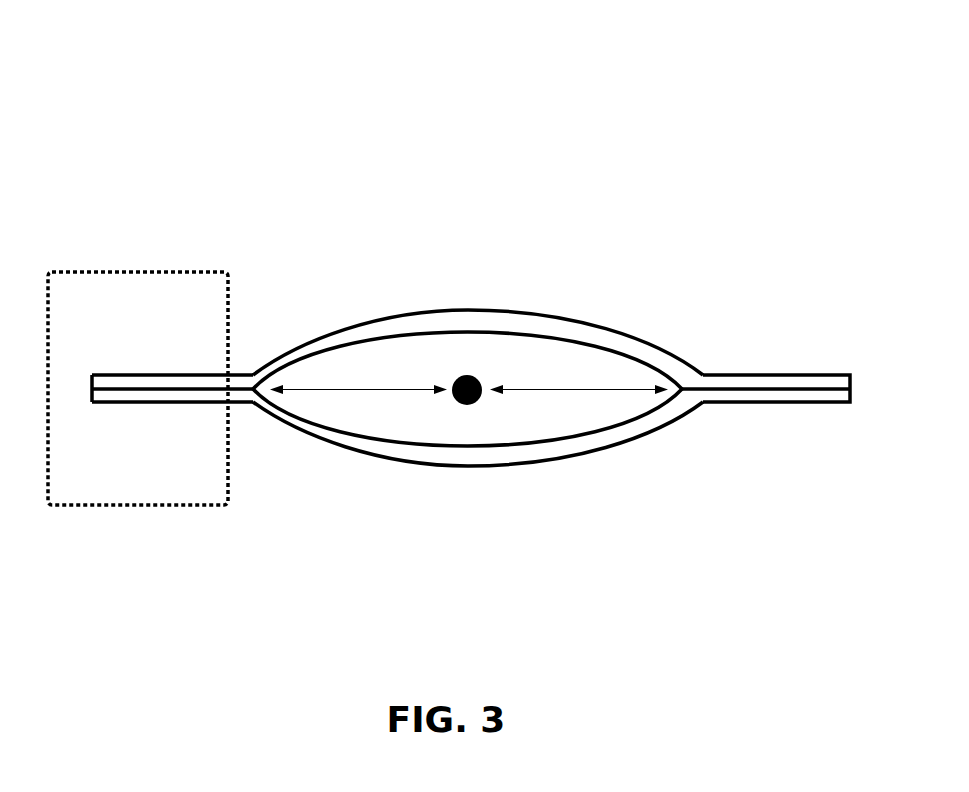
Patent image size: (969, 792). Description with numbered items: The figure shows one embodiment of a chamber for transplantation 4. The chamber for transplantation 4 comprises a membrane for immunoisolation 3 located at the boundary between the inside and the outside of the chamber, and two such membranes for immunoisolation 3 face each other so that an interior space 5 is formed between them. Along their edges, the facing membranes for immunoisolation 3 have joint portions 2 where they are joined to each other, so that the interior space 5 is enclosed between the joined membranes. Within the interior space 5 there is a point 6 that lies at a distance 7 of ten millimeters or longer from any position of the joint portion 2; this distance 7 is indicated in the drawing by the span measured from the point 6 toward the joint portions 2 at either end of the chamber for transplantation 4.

The joint portion 2 is at (112, 403).
The membrane for immunoisolation 3 is at (478, 456).
The chamber for transplantation 4 is at (730, 303).
The interior space 5 is at (609, 368).
The point 6 is at (455, 385).
The distance 7 is at (407, 391).